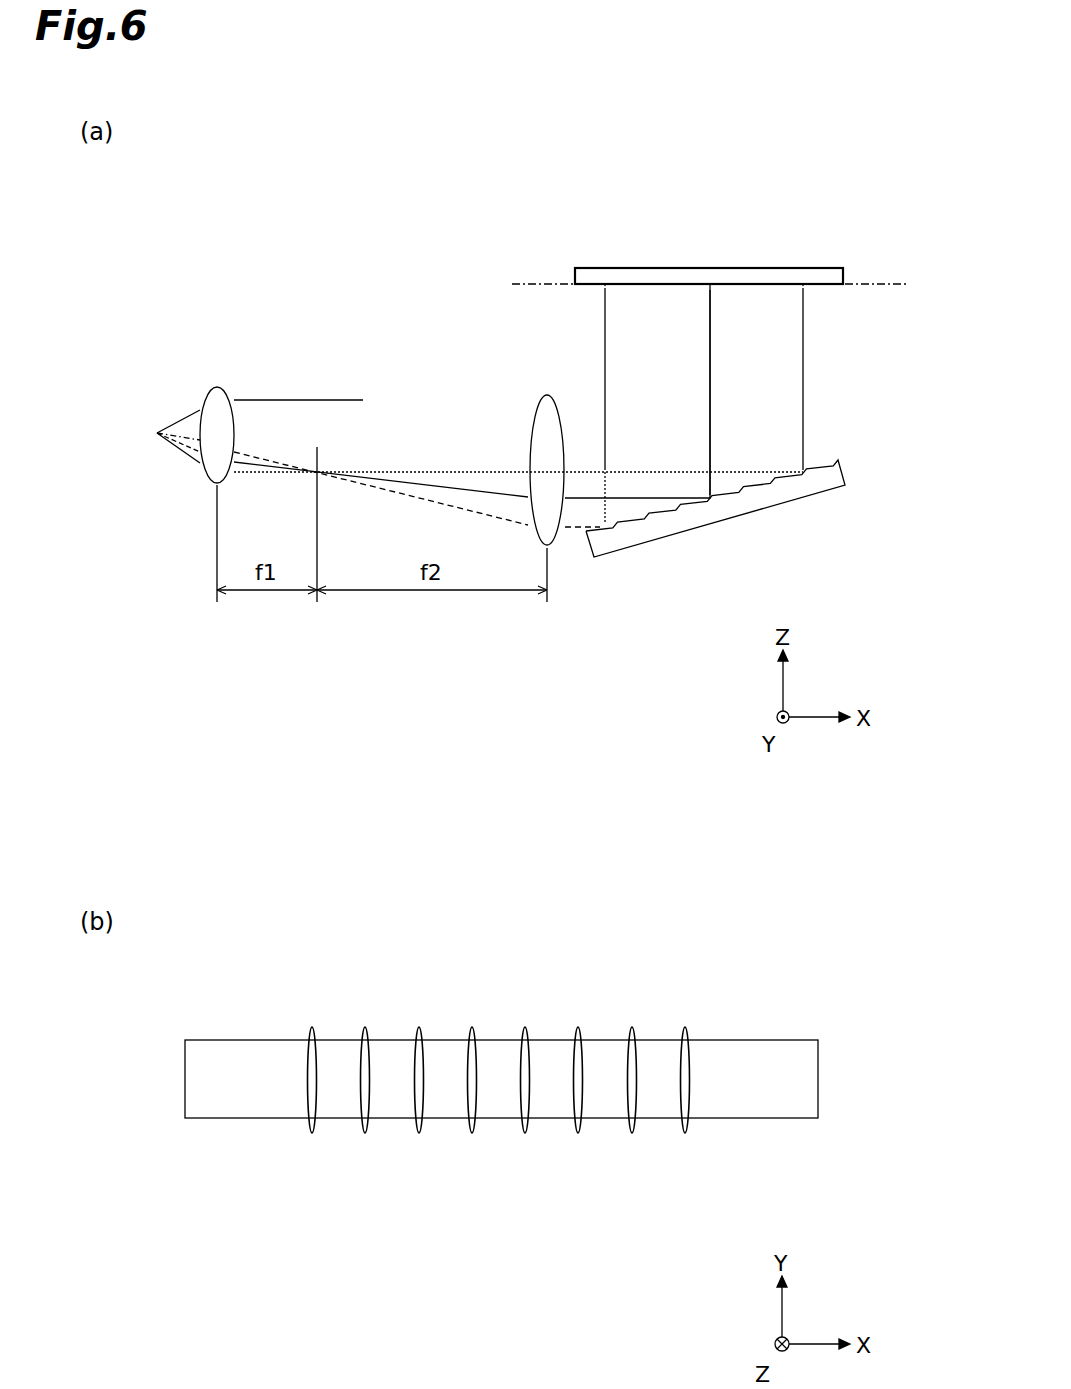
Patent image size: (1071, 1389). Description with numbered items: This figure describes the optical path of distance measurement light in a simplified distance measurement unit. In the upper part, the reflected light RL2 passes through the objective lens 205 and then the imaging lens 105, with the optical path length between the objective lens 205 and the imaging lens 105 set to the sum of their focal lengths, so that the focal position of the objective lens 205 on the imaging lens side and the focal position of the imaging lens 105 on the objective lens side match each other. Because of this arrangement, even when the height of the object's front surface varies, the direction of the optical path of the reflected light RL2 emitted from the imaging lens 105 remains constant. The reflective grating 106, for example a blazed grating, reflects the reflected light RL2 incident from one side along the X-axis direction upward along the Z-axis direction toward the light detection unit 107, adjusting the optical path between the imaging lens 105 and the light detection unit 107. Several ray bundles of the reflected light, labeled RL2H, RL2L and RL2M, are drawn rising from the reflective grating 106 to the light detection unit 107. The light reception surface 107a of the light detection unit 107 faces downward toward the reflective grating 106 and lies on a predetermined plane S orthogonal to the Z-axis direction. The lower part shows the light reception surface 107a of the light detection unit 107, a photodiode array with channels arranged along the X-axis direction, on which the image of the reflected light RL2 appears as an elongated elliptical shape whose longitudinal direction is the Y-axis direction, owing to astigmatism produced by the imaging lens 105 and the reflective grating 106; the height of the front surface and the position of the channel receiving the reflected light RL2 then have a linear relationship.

The objective lens 205 is at (217, 387).
The imaging lens 105 is at (528, 420).
The reflective grating 106 is at (727, 523).
The light detection unit 107 is at (710, 267).
The light reception surface 107a is at (832, 286).
The predetermined plane S is at (522, 286).
The high wavelength light RL2H is at (605, 350).
The low wavelength light RL2L is at (805, 352).
The middle wavelength light RL2M is at (712, 392).
The reflected light RL2 is at (697, 1143).